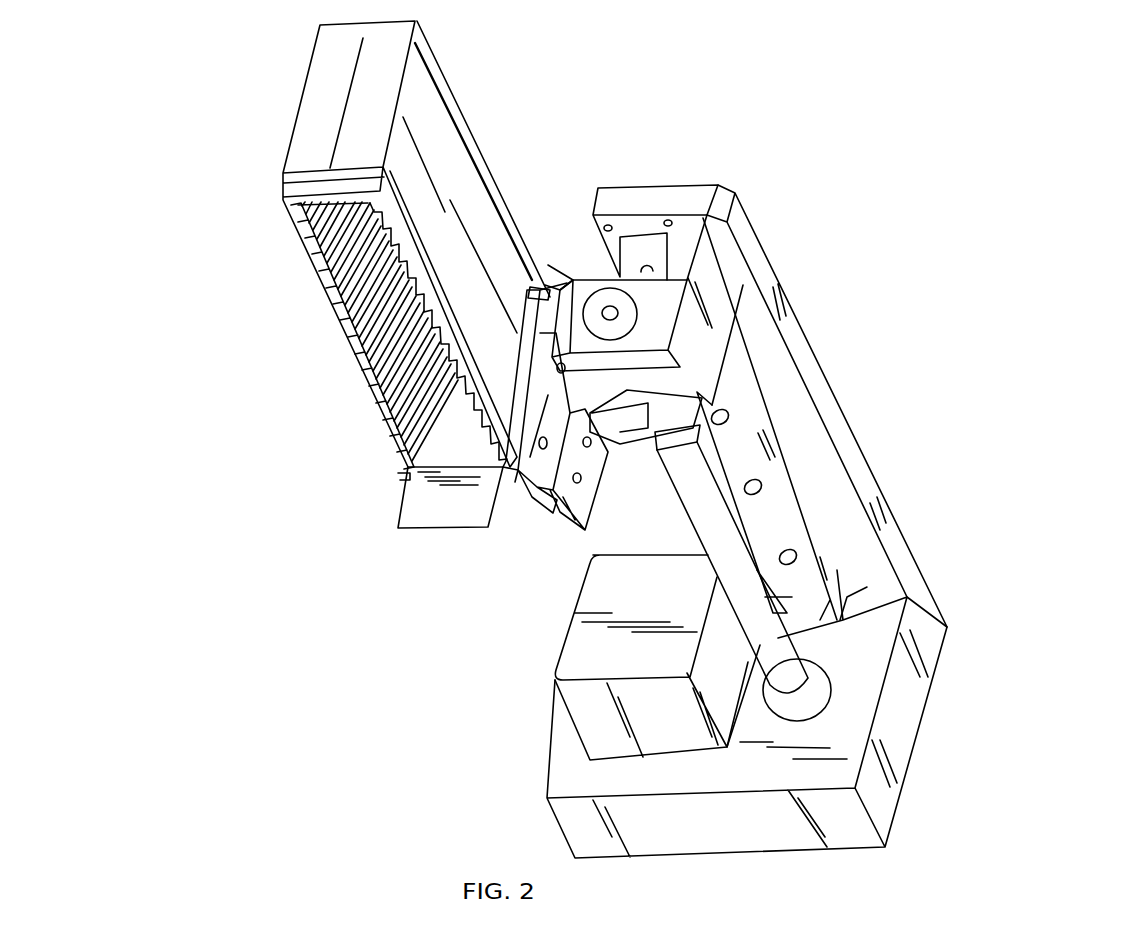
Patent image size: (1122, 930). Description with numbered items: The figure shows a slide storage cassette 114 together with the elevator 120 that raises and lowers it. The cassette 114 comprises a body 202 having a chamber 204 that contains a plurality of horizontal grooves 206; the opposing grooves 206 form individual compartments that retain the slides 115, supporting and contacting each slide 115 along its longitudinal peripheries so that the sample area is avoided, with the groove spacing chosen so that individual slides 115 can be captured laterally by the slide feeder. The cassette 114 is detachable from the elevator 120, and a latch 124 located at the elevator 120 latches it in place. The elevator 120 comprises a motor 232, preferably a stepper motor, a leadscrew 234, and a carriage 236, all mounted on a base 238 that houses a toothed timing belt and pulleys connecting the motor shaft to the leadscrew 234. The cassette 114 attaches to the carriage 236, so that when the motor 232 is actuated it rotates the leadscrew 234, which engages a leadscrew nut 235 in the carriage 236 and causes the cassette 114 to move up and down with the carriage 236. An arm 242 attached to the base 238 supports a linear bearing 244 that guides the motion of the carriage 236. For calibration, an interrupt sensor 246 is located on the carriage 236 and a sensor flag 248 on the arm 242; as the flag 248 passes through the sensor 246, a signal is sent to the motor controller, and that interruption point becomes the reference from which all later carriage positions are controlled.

The slide storage cassette 114 is at (364, 245).
The body 202 is at (455, 160).
The chamber 204 is at (346, 247).
The horizontal grooves 206 is at (343, 306).
The slides 115 is at (418, 505).
The latch 124 is at (540, 484).
The sensor flag 248 is at (625, 442).
The interrupt sensor 246 is at (668, 420).
The motor 232 is at (597, 703).
The leadscrew 234 is at (777, 640).
The base 238 is at (845, 812).
The arm 242 is at (860, 447).
The carriage 244 is at (722, 388).
The carriage 236 is at (724, 292).
The leadscrew nut 235 is at (628, 313).
The elevator 120 is at (996, 489).